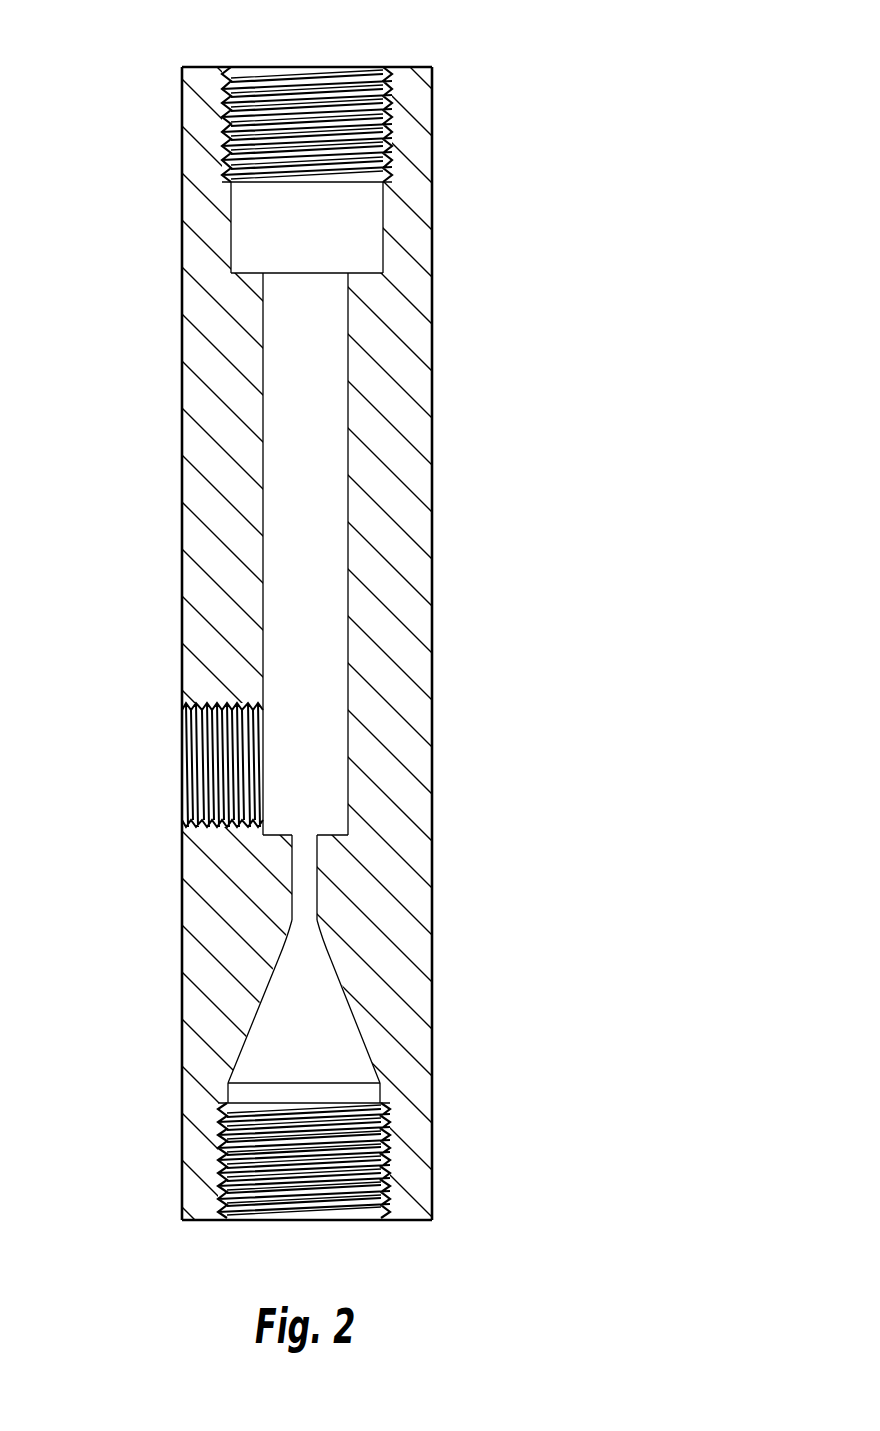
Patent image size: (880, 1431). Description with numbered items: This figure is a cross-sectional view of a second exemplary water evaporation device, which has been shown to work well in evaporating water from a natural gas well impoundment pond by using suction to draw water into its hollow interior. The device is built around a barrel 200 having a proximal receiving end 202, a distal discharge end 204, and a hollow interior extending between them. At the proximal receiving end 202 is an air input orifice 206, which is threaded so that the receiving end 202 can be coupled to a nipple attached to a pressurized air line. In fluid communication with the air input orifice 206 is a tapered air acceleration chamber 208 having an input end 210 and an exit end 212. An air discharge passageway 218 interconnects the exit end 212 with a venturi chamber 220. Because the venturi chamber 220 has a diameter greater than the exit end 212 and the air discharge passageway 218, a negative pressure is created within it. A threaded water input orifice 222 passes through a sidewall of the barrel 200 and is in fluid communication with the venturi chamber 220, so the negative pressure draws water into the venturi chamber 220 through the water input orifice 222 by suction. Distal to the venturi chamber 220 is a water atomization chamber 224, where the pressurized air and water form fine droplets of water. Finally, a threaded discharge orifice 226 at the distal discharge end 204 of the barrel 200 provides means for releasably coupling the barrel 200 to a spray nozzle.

The barrel 200 is at (160, 434).
The proximal receiving end 202 is at (432, 1152).
The distal discharge end 204 is at (433, 110).
The air input orifice 206 is at (272, 1127).
The tapered air acceleration chamber 208 is at (306, 953).
The input end 210 is at (355, 1008).
The exit end 212 is at (318, 922).
The air discharge passageway 218 is at (308, 885).
The venturi chamber 220 is at (312, 773).
The threaded water input orifice 222 is at (185, 758).
The water atomization chamber 224 is at (317, 528).
The threaded discharge orifice 226 is at (357, 82).